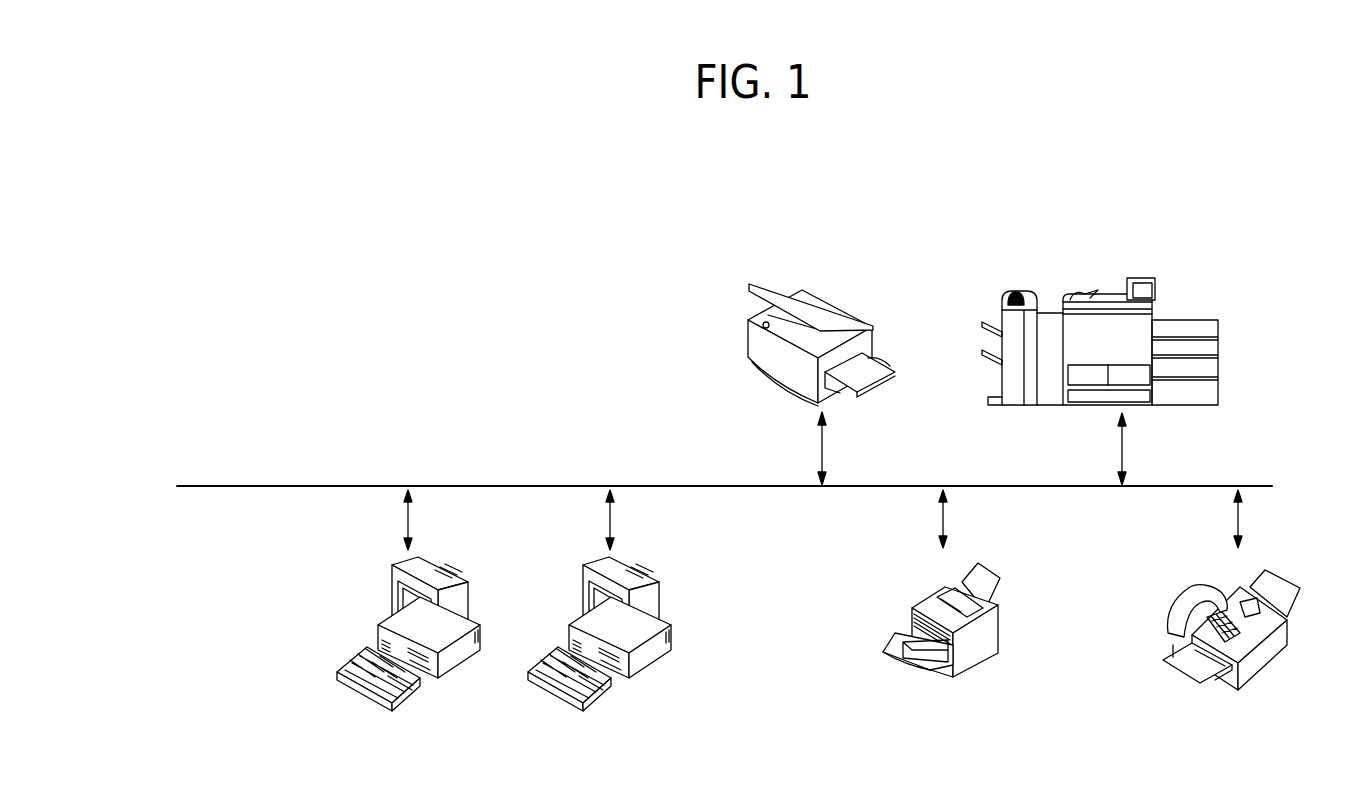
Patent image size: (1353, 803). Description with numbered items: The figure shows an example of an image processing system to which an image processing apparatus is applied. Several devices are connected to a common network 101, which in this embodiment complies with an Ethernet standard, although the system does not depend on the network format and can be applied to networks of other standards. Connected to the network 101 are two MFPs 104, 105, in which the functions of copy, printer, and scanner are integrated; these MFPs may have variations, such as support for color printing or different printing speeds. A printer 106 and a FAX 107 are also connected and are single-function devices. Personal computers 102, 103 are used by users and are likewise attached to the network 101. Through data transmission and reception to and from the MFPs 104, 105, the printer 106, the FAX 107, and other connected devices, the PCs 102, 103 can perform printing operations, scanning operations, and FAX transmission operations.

The network 101 is at (252, 490).
The personal computer 102 is at (393, 706).
The personal computer 103 is at (599, 663).
The MFP 104 is at (786, 287).
The MFP 105 is at (1143, 276).
The printer 106 is at (968, 679).
The FAX 107 is at (1248, 682).